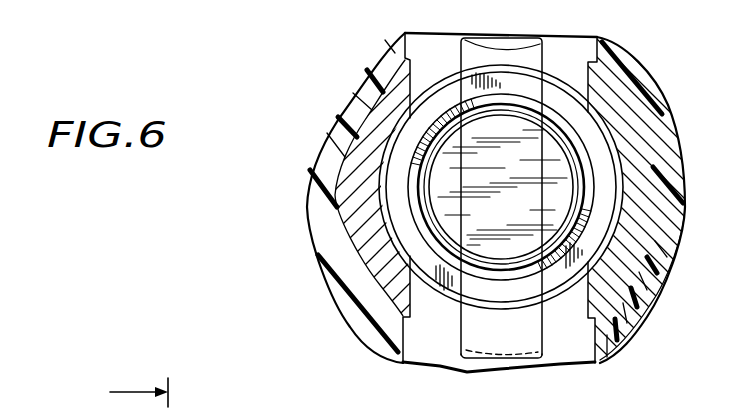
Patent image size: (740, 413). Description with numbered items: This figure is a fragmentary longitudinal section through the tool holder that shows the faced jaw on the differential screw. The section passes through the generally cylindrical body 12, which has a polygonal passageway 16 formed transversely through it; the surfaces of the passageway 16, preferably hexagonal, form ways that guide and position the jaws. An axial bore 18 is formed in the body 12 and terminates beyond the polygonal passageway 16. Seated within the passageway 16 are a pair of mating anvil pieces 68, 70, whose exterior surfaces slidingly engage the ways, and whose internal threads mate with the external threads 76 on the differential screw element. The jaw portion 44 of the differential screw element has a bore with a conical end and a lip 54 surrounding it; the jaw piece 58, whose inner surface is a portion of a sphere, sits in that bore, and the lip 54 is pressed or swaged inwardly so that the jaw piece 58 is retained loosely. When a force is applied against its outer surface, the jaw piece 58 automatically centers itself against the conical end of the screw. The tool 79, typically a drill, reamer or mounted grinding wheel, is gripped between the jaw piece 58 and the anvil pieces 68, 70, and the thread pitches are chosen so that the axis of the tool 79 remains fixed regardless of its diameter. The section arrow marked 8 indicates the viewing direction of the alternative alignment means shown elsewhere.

The section line indicator for FIG. 8 is at (125, 392).
The body 12 is at (352, 287).
The polygonal passageway 16 is at (353, 233).
The axial bore 18 is at (410, 342).
The jaw portion 44 is at (520, 283).
The lip 54 is at (541, 268).
The jaw piece 58 is at (458, 226).
The anvil piece 68 is at (352, 165).
The anvil piece 70 is at (633, 255).
The external threads 76 is at (447, 296).
The tool 79 is at (548, 345).